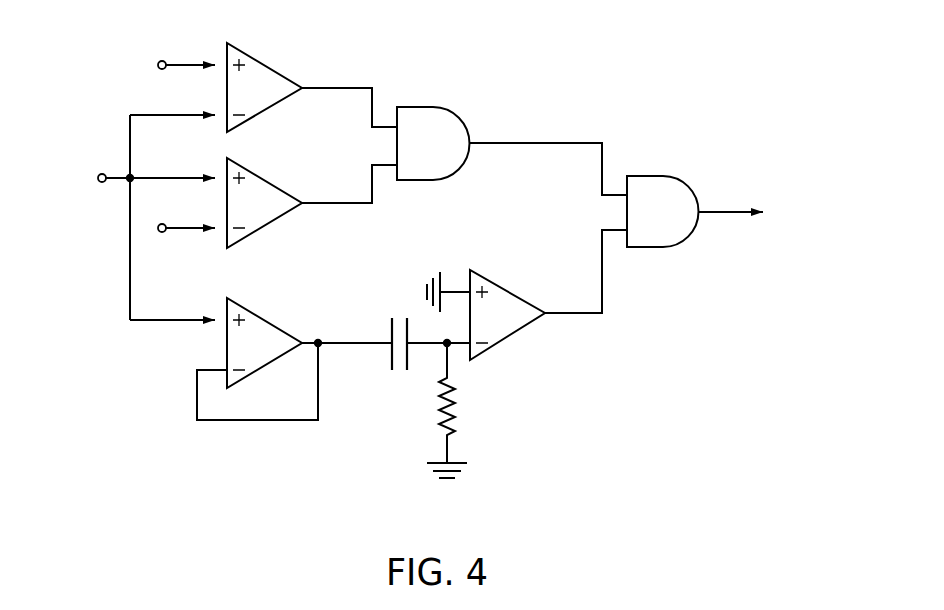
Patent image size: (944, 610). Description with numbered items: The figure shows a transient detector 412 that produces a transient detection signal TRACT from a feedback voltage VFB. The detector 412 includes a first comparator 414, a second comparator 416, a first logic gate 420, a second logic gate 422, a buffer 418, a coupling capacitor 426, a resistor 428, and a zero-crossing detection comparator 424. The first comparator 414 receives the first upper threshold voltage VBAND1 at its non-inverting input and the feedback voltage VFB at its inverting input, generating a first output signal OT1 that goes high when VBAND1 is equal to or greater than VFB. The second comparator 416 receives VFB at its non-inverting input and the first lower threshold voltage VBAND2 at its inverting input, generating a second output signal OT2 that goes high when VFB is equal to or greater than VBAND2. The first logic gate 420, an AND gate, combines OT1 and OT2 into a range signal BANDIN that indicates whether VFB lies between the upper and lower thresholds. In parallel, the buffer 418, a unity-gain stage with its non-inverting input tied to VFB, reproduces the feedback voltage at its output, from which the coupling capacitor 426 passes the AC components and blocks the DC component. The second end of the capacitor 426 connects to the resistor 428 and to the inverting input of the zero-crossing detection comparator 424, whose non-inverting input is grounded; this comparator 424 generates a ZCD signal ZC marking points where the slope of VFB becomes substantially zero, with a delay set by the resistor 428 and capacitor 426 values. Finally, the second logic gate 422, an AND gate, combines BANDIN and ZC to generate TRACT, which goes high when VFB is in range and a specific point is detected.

The transient detector 412 is at (100, 48).
The first comparator 414 is at (265, 60).
The second comparator 416 is at (265, 181).
The buffer 418 is at (262, 319).
The first logic gate 420 is at (452, 112).
The second logic gate 422 is at (680, 180).
The zero-crossing detection (ZCD) comparator 424 is at (500, 287).
The coupling capacitor 426 is at (391, 372).
The resistor 428 is at (455, 410).